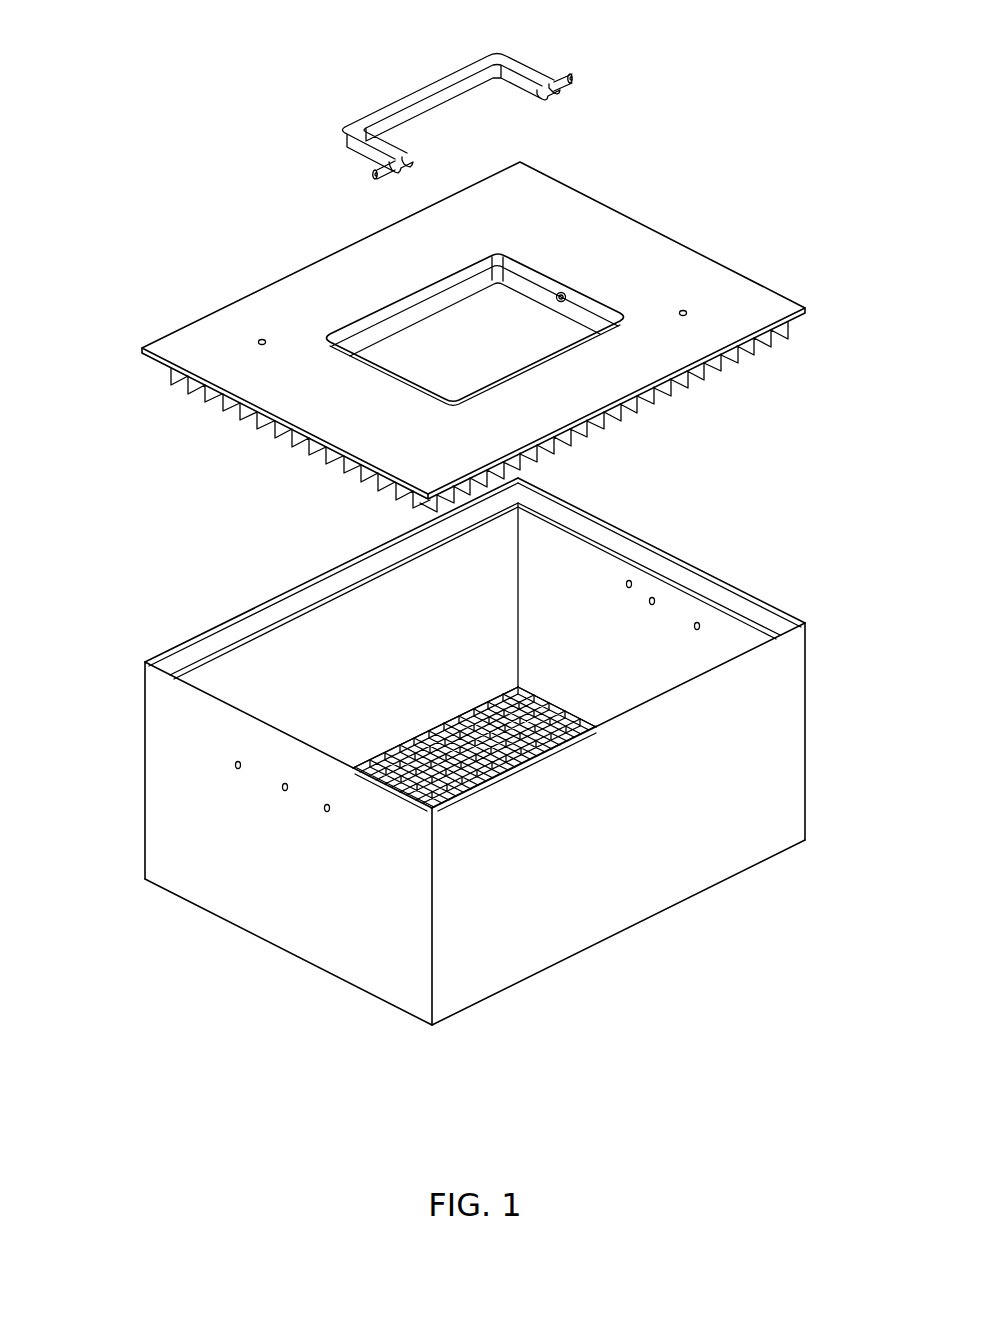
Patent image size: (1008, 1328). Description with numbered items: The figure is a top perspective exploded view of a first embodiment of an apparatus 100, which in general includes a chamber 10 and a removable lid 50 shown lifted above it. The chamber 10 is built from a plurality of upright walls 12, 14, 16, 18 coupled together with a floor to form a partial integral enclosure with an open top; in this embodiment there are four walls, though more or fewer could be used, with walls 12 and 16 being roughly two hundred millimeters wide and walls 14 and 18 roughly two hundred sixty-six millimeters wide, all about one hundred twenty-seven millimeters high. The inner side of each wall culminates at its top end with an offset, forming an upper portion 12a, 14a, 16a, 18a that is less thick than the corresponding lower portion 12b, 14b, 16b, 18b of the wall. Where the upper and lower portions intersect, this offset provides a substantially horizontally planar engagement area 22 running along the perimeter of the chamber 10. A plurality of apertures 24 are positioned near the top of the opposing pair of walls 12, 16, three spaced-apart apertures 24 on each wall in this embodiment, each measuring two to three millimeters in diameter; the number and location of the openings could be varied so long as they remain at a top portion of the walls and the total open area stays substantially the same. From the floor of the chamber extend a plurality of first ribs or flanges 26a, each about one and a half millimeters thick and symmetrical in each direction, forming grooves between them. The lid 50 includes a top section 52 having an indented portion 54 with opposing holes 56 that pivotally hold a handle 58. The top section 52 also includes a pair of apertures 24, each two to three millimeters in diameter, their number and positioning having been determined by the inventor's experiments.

The apparatus 100 is at (770, 104).
The chamber 10 is at (757, 556).
The wall 12 is at (256, 875).
The upper portion of wall 12a is at (178, 688).
The lower portion of wall 12b is at (317, 940).
The wall 14 is at (613, 841).
The upper portion of wall 14a is at (743, 657).
The lower portion of wall 14b is at (696, 882).
The wall 16 is at (564, 646).
The upper portion of wall 16a is at (613, 538).
The lower portion of wall 16b is at (590, 700).
The wall 18 is at (316, 666).
The upper portion of wall 18a is at (252, 620).
The lower portion of wall 18b is at (458, 685).
The engagement area 22 is at (343, 590).
The apertures 24 is at (262, 339).
The first ribs or flanges 26a is at (505, 770).
The removable lid 50 is at (780, 252).
The top section 52 is at (556, 187).
The indented portion 54 is at (442, 330).
The holes 56 is at (565, 292).
The handle 58 is at (420, 84).